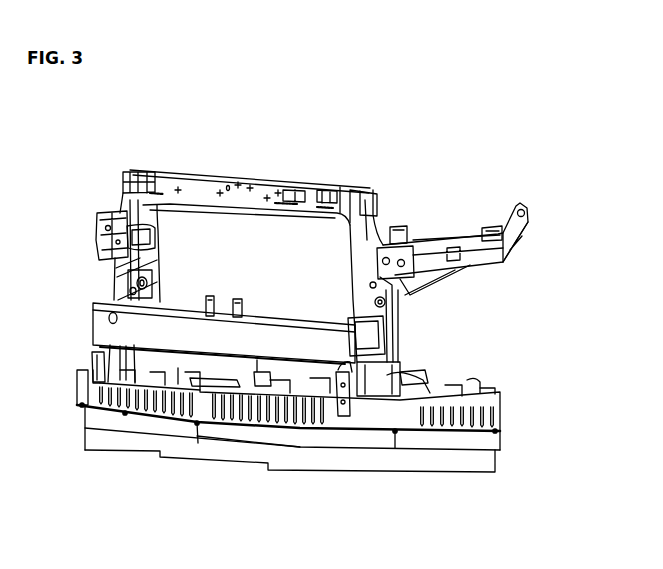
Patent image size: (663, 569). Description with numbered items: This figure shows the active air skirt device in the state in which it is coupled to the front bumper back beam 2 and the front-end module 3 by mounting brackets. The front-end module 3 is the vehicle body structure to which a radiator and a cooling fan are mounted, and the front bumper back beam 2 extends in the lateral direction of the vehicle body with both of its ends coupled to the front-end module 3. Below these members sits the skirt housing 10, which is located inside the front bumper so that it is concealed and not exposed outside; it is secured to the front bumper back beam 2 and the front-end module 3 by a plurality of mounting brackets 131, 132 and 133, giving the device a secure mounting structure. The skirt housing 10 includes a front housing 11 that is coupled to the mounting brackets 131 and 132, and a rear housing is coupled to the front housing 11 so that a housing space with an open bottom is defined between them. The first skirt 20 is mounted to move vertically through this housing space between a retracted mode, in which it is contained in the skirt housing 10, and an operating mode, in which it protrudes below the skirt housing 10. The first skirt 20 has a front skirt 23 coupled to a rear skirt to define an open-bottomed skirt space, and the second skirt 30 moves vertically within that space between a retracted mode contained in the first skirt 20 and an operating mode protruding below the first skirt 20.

The front-end module 3 is at (207, 186).
The front bumper back beam 2 is at (287, 333).
The mounting bracket 131 is at (260, 384).
The mounting bracket 132 is at (95, 355).
The mounting bracket 133 is at (416, 378).
The skirt housing 10 is at (497, 388).
The front housing 11 is at (150, 415).
The first skirt 20 is at (460, 452).
The front skirt 23 is at (236, 442).
The second skirt 30 is at (303, 462).